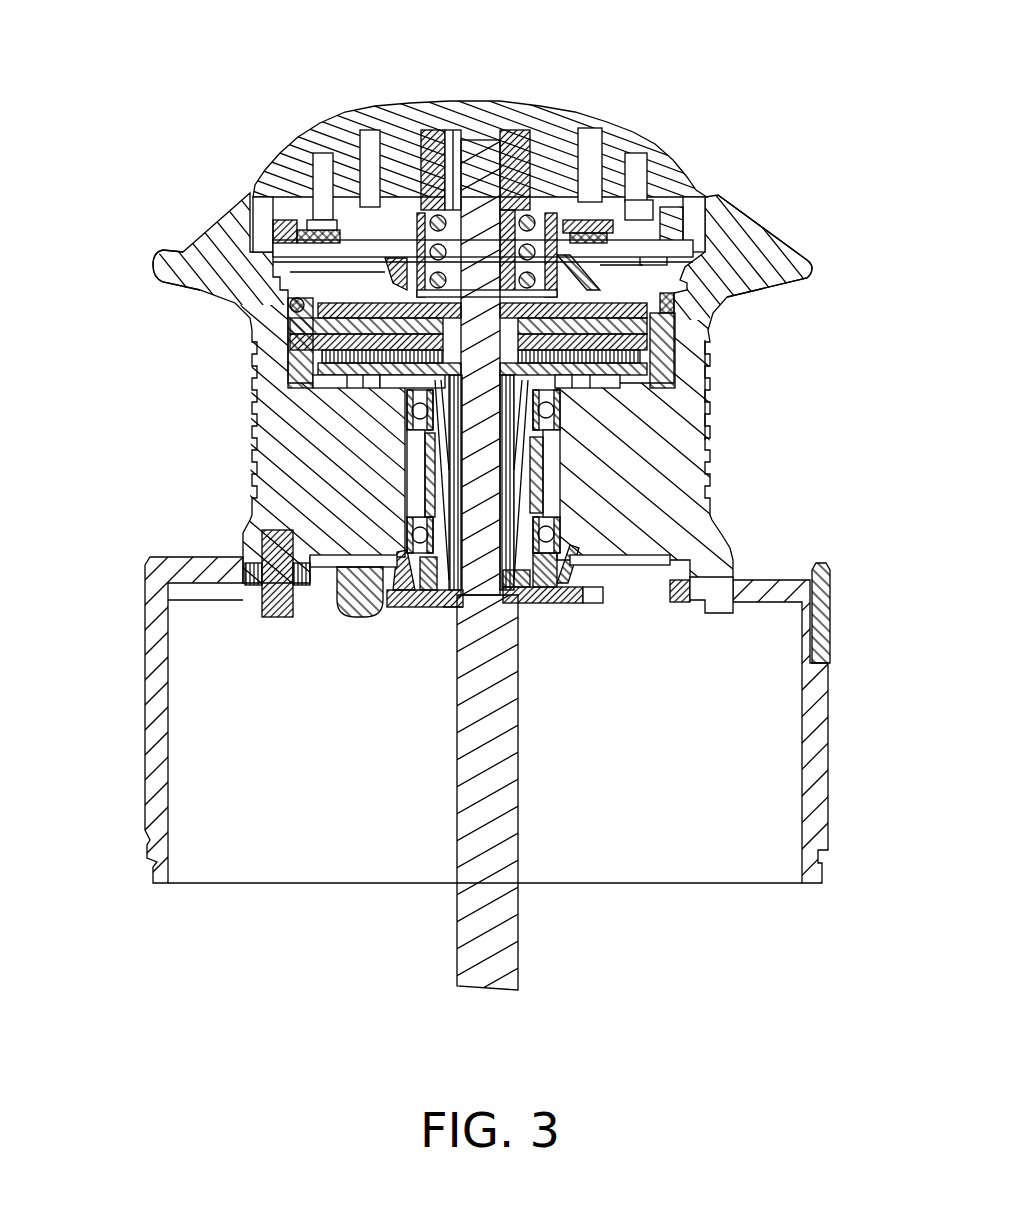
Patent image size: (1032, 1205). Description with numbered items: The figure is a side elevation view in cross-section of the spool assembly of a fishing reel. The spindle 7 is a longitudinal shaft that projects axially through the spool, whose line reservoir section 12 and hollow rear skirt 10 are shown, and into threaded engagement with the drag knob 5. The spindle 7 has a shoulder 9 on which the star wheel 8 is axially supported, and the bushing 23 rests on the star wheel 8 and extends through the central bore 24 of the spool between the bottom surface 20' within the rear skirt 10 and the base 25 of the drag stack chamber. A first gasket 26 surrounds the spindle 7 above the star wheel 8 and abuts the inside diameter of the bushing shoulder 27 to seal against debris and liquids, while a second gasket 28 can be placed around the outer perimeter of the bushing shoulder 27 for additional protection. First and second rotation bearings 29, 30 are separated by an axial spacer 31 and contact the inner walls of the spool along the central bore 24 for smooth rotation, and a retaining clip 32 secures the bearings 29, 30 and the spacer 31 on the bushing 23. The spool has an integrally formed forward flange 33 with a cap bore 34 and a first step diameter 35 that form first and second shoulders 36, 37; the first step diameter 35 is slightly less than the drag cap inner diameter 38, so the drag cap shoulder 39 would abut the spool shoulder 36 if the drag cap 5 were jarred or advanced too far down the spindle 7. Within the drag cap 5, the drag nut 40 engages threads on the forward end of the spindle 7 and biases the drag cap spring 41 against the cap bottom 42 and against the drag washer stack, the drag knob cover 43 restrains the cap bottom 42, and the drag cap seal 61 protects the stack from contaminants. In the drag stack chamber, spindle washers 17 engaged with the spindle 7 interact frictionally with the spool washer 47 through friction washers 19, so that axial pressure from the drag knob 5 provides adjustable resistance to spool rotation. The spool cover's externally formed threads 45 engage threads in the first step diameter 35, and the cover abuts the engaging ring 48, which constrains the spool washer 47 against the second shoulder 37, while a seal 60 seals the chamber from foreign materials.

The drag knob 5 is at (272, 152).
The spindle 7 is at (522, 932).
The star wheel 8 is at (416, 611).
The shoulder 9 is at (443, 617).
The rear skirt 10 is at (140, 678).
The line reservoir section 12 is at (250, 505).
The spindle washers 17 is at (310, 317).
The friction washers 19 is at (304, 331).
The bottom surface 20' is at (522, 638).
The bushing 23 is at (541, 455).
The central bore 24 is at (405, 468).
The base 25 is at (428, 383).
The first gasket 26 is at (514, 592).
The bushing shoulder 27 is at (582, 553).
The second gasket 28 is at (262, 597).
The first rotation bearing 29 is at (568, 528).
The second rotation bearing 30 is at (565, 417).
The axial spacer 31 is at (549, 482).
The retaining clip 32 is at (712, 400).
The forward flange 33 is at (165, 251).
The cap bore 34 is at (720, 198).
The first step diameter 35 is at (715, 270).
The first shoulder 36 is at (693, 243).
The second shoulder 37 is at (712, 372).
The drag cap inner diameter 38 is at (265, 233).
The drag cap shoulder 39 is at (273, 222).
The drag nut 40 is at (512, 127).
The drag cap spring 41 is at (534, 218).
The cap bottom 42 is at (630, 200).
The drag knob cover 43 is at (346, 223).
The externally formed threads 45 is at (683, 304).
The spool washer 47 is at (677, 338).
The engaging ring 48 is at (674, 320).
The seal 60 is at (280, 300).
The drag cap seal 61 is at (355, 276).